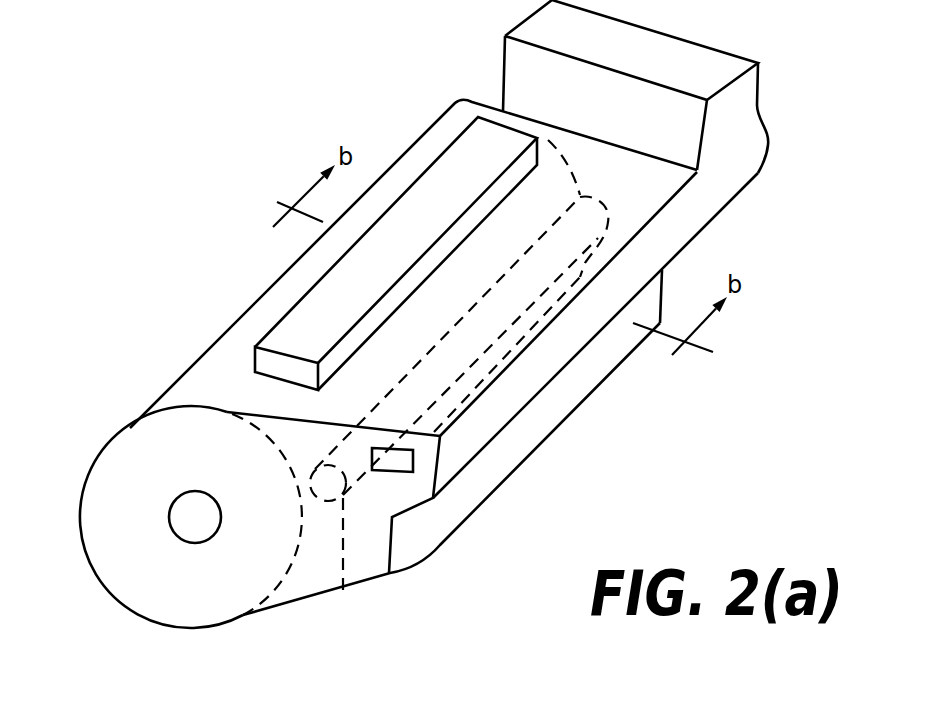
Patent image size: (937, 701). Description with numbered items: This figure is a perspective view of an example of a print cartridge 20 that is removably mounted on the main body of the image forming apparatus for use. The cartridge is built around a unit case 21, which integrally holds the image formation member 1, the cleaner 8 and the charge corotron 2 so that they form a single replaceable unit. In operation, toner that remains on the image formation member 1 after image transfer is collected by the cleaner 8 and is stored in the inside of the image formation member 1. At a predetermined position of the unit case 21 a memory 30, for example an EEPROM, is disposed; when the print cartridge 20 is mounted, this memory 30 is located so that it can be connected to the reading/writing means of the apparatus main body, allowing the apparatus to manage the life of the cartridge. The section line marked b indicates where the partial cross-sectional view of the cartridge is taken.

The image formation member 1 is at (302, 540).
The charge corotron 2 is at (305, 330).
The cleaner 8 is at (352, 598).
The print cartridge 20 is at (394, 104).
The unit case 21 is at (550, 357).
The memory 30 is at (415, 462).